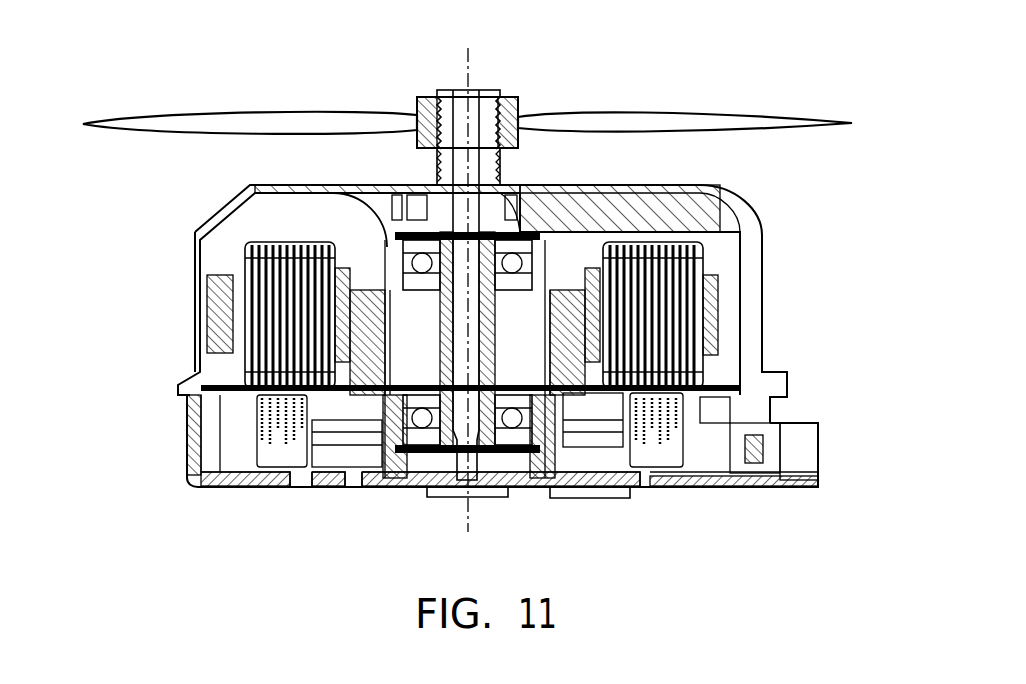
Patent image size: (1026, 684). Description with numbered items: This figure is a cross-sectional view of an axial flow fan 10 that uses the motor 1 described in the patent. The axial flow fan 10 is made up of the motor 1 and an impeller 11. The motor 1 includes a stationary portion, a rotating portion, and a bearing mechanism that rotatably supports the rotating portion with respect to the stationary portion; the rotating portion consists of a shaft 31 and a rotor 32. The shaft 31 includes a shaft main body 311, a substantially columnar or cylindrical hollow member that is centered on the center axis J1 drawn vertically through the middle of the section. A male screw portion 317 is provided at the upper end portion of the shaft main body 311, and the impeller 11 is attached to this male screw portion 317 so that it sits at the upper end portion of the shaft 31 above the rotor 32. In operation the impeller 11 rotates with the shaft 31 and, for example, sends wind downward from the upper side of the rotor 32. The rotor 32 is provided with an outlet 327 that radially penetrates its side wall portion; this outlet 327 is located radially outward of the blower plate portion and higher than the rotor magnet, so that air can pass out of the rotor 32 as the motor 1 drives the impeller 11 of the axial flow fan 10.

The axial flow fan 10 is at (158, 41).
The impeller 11 is at (215, 125).
The motor 1 is at (192, 208).
The shaft 31 is at (312, 163).
The shaft main body 311 is at (425, 186).
The male screw portion 317 is at (497, 96).
The rotor 32 is at (196, 318).
The outlet 327 is at (190, 254).
The center axis J1 is at (466, 65).